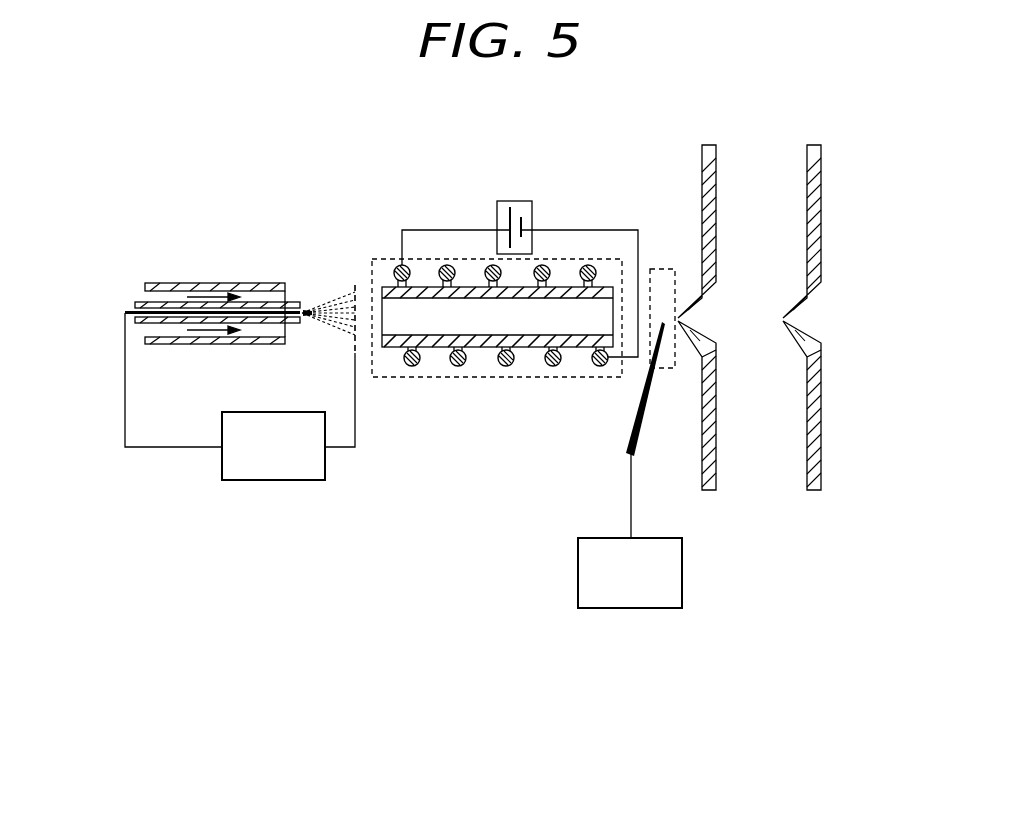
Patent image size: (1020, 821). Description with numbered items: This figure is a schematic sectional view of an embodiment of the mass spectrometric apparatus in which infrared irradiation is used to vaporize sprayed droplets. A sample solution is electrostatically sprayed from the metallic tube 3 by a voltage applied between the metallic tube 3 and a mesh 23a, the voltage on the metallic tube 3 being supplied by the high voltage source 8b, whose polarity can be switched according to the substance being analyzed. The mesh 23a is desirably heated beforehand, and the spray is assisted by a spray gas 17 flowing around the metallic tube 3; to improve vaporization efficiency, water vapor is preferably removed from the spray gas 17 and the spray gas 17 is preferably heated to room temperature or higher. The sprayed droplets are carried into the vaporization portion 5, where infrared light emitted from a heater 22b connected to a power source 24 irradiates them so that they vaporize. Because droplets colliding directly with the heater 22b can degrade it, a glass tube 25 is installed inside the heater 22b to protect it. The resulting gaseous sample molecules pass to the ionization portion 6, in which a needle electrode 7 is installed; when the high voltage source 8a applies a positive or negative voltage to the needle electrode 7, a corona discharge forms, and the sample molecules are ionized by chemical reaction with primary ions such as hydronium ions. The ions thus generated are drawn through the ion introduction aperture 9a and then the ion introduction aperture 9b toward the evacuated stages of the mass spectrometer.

The metallic tube 3 is at (125, 313).
The spray gas 17 is at (203, 293).
The mesh 23a is at (355, 285).
The heater 22b is at (398, 263).
The glass tube 25 is at (473, 287).
The power source 24 is at (533, 205).
The vaporization portion 5 is at (611, 265).
The ionization portion 6 is at (663, 268).
The needle electrode 7 is at (627, 438).
The high voltage source 8a is at (578, 592).
The high voltage source 8b is at (297, 480).
The ion introduction aperture 9a is at (678, 324).
The ion introduction aperture 9b is at (783, 318).